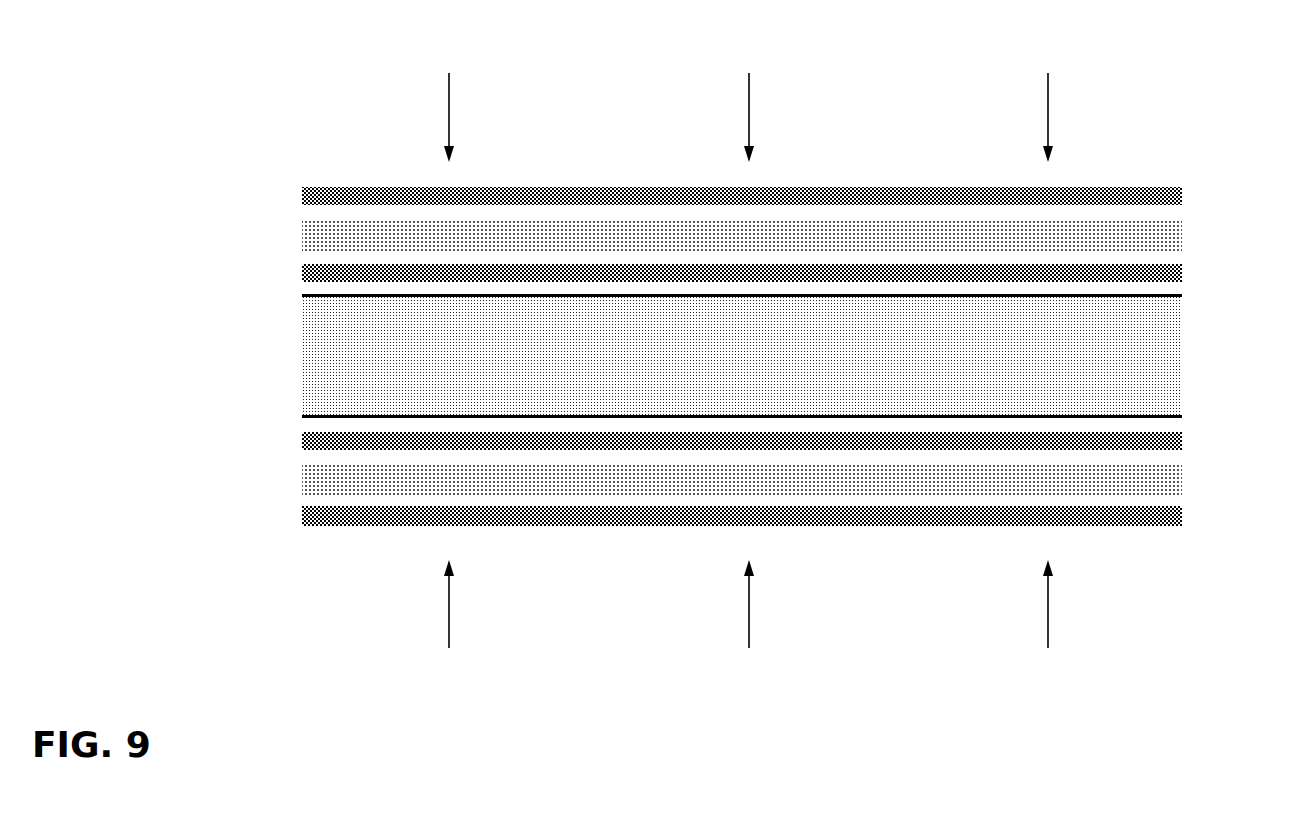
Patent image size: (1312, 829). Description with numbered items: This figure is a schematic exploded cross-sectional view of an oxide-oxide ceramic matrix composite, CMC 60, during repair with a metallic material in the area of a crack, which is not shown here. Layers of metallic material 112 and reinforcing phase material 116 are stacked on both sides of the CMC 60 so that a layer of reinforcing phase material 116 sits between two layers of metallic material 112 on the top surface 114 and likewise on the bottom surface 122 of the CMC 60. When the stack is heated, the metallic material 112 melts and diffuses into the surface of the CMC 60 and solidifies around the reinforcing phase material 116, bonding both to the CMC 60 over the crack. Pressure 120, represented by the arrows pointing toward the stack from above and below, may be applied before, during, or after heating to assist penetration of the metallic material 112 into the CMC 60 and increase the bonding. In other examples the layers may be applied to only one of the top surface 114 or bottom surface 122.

The CMC 60 is at (727, 402).
The metallic material 112 is at (1182, 196).
The top surface 114 is at (360, 295).
The reinforcing phase material 116 is at (1182, 238).
The pressure 120 is at (748, 362).
The bottom surface 122 is at (400, 417).